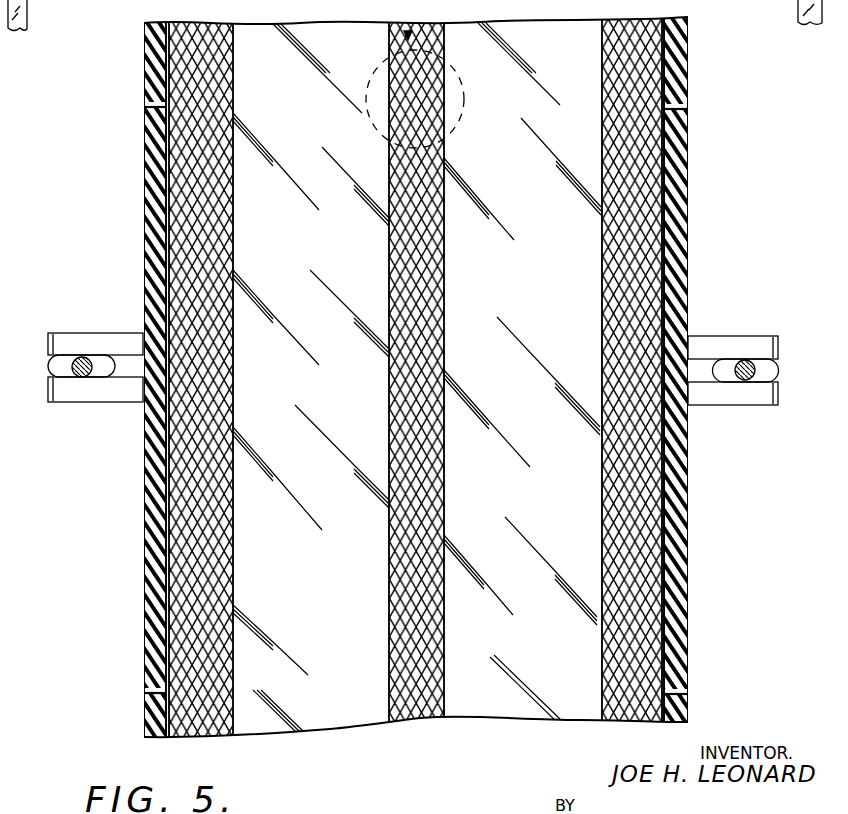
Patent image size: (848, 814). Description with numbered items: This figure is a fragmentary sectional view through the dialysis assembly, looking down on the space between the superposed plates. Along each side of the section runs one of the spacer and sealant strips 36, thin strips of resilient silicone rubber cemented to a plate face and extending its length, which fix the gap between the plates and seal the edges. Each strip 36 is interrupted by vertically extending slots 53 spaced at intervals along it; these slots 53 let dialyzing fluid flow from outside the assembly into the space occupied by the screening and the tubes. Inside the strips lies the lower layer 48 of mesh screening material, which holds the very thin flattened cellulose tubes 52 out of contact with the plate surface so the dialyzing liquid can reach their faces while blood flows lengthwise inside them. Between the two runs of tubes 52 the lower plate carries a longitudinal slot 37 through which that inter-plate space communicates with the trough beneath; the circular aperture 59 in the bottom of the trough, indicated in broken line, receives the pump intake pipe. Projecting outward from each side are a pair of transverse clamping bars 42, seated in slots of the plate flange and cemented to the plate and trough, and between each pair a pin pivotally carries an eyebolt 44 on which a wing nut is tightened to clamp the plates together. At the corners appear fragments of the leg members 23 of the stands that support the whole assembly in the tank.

The leg members 23 is at (25, 12).
The spacer and sealant strips 36 is at (145, 250).
The slot 37 is at (400, 44).
The clamping bars 42 is at (77, 317).
The eyebolt 44 is at (74, 366).
The lower layer of mesh screening material 48 is at (182, 290).
The cellulose tubes 52 is at (326, 237).
The vertically extending slots 53 is at (143, 106).
The circular aperture 59 is at (377, 79).